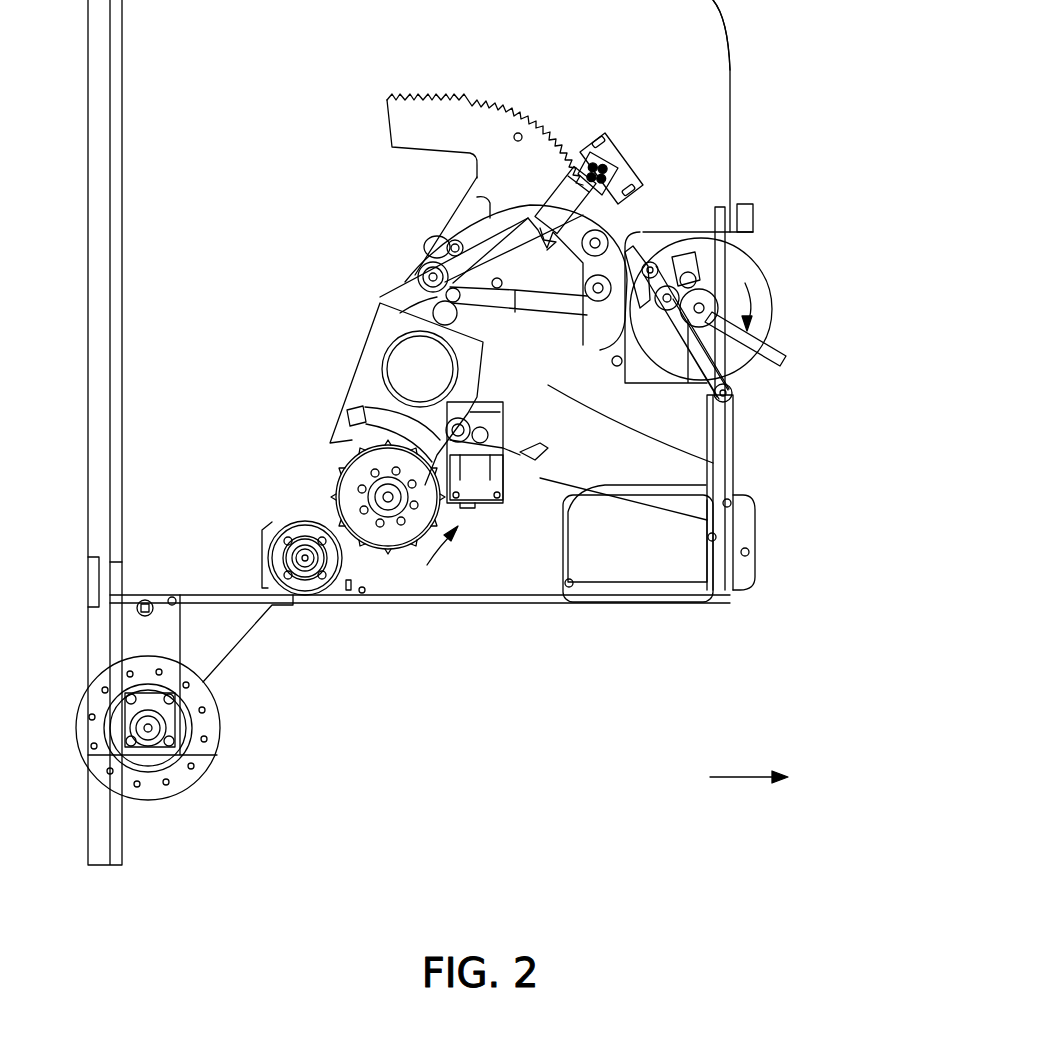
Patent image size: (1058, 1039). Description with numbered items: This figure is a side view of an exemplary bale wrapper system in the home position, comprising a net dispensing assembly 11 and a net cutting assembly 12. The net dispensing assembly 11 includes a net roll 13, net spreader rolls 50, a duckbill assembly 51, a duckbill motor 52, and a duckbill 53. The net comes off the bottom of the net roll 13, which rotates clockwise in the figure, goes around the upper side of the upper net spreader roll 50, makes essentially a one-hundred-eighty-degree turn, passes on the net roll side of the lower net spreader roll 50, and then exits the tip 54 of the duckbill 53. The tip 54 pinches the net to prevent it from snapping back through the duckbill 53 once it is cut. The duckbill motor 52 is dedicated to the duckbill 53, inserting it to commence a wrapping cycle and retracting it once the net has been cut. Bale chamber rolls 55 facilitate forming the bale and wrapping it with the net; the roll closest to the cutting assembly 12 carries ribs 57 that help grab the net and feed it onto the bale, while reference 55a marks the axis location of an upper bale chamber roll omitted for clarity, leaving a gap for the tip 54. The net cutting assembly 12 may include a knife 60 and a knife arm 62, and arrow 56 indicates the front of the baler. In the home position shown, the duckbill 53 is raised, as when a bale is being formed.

The net dispensing assembly 11 is at (600, 103).
The net cutting assembly 12 is at (487, 520).
The net roll 13 is at (770, 294).
The net spreader rolls 50 is at (598, 242).
The duckbill assembly 51 is at (467, 120).
The duckbill motor 52 is at (561, 195).
The duckbill 53 is at (727, 398).
The tip 54 is at (545, 372).
The bale chamber rolls 55 is at (392, 535).
The axis location of a bale chamber roll 55a is at (415, 372).
The arrow 56 is at (750, 778).
The ribs 57 is at (374, 552).
The knife 60 is at (567, 512).
The knife arm 62 is at (545, 455).